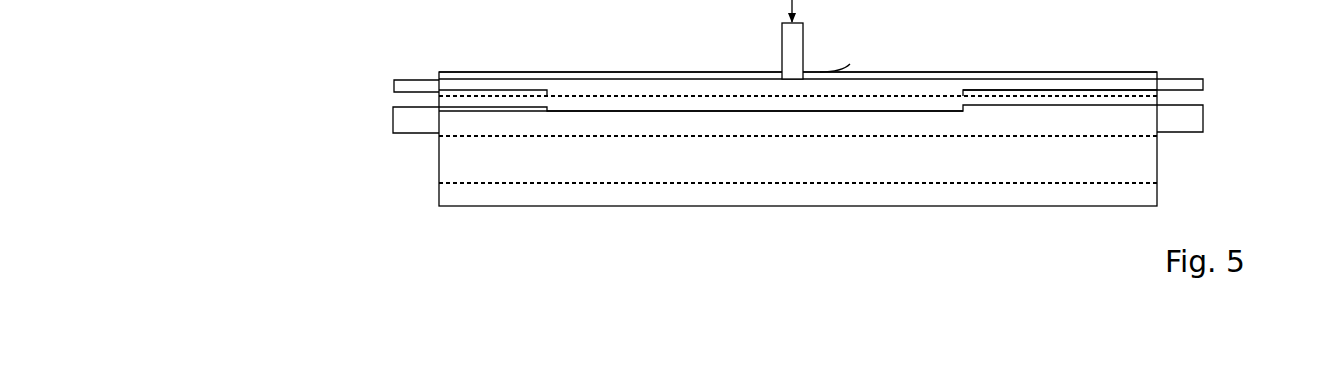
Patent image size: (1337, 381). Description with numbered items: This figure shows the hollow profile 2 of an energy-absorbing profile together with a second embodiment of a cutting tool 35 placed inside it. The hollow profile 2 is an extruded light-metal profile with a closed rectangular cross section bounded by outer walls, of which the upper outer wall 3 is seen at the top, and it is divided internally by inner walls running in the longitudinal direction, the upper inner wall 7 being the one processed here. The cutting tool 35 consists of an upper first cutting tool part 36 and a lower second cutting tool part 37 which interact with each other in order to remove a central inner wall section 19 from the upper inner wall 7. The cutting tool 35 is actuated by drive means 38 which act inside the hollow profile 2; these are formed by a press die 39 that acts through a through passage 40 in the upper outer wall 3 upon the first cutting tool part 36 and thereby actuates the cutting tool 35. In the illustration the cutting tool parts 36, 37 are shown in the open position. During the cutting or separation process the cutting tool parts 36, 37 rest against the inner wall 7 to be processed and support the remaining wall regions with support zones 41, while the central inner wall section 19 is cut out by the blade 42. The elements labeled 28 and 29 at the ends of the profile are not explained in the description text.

The hollow profile 2 is at (600, 208).
The upper outer wall 3 is at (958, 70).
The upper inner wall 7 is at (1075, 93).
The inner wall section 19 is at (876, 99).
The connection tab 28 is at (1207, 128).
The contact strip 29 is at (417, 80).
The cutting tool 35 is at (375, 90).
The first cutting tool part 36 is at (490, 78).
The second cutting tool part 37 is at (503, 125).
The drive means 38 is at (813, 43).
The press die 39 is at (792, 57).
The through passage 40 is at (850, 64).
The support zones 41 is at (517, 88).
The blade 42 is at (945, 87).